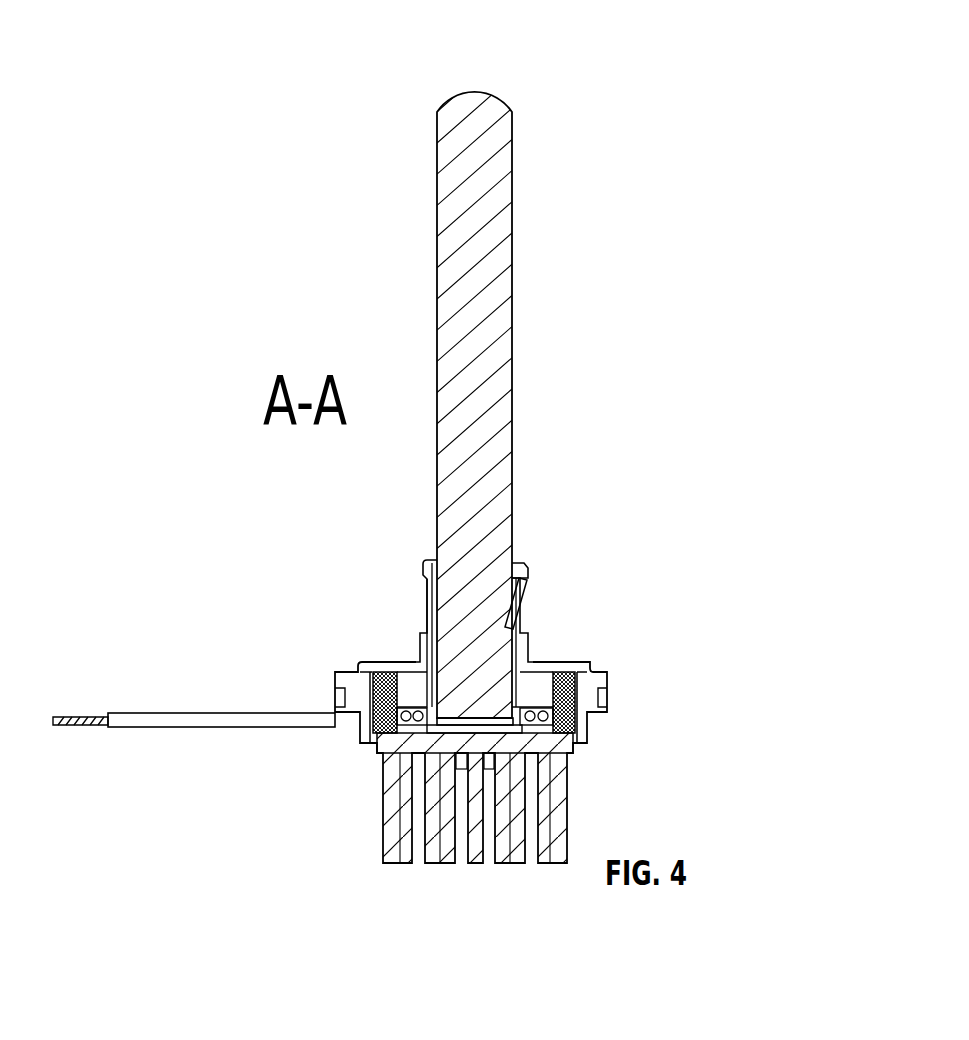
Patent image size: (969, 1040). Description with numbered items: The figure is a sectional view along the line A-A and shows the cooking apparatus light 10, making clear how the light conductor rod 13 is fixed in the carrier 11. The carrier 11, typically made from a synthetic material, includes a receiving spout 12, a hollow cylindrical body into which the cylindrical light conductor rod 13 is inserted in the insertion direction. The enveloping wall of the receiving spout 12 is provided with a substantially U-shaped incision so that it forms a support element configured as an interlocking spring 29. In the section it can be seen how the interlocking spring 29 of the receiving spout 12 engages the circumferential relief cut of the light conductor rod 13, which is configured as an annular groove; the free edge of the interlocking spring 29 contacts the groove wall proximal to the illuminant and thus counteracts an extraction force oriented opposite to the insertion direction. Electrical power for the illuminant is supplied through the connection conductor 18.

The cooking apparatus light 10 is at (585, 142).
The light conductor rod 13 is at (525, 322).
The receiving spout 12 is at (540, 567).
The interlocking spring 29 is at (523, 602).
The carrier 11 is at (622, 670).
The connection conductor 18 is at (187, 723).